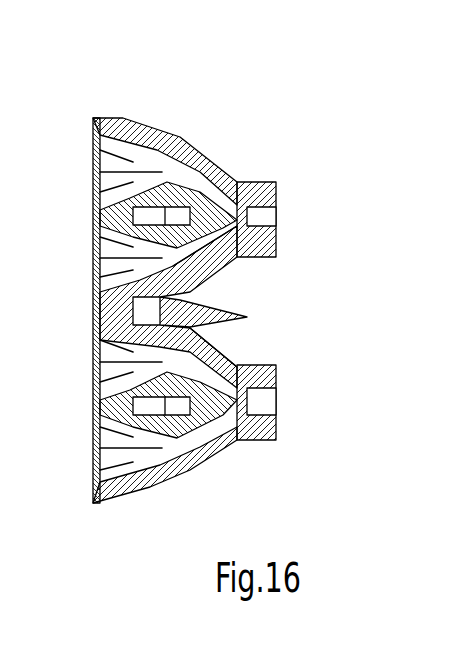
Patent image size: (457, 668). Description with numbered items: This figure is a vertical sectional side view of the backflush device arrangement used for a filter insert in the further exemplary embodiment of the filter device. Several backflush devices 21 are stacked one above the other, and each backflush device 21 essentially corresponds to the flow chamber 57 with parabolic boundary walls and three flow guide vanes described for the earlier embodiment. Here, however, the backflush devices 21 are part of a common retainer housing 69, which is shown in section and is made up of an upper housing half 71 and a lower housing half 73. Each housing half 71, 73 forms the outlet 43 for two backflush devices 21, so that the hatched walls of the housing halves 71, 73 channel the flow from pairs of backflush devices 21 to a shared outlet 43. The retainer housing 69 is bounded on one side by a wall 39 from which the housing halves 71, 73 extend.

The backflush device 21 is at (177, 136).
The base wall 39 is at (93, 143).
The outlet 43 is at (277, 214).
The flow chamber 57 is at (142, 162).
The retainer housing 69 is at (223, 322).
The upper housing half 71 is at (227, 276).
The lower housing half 73 is at (233, 353).